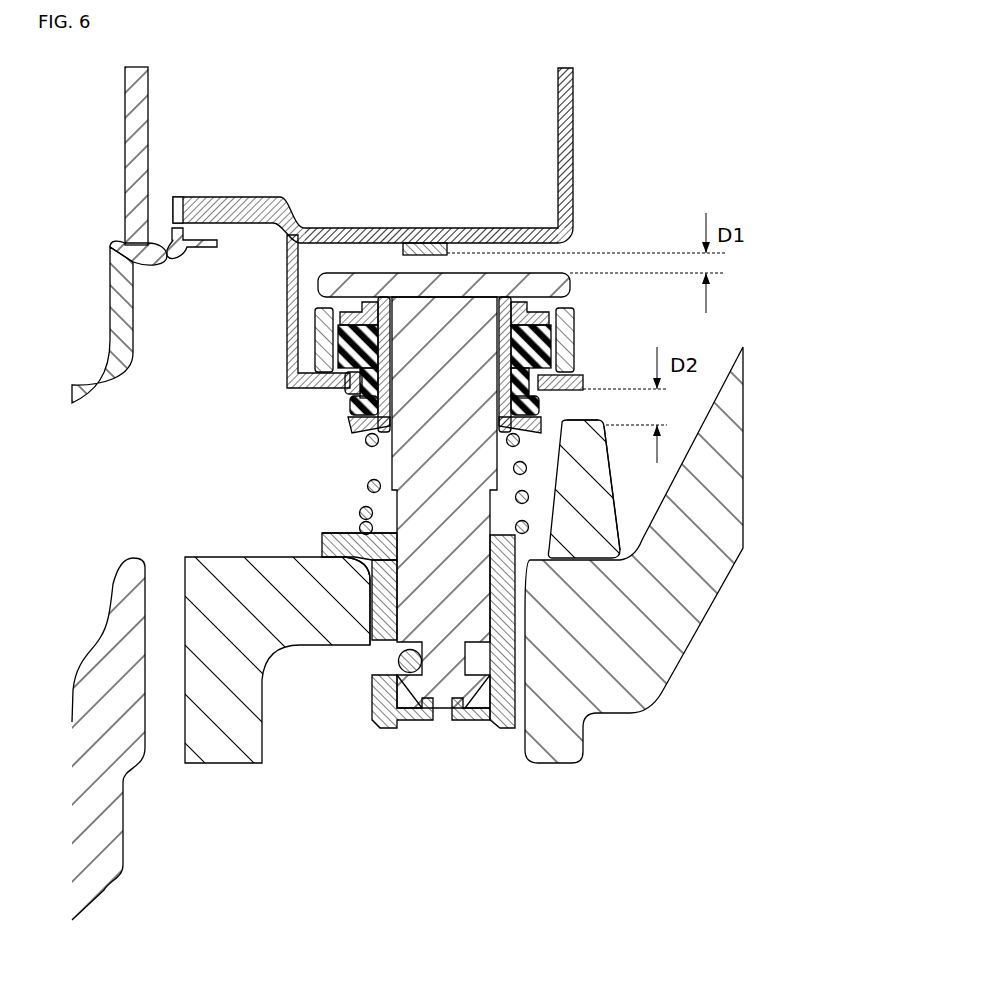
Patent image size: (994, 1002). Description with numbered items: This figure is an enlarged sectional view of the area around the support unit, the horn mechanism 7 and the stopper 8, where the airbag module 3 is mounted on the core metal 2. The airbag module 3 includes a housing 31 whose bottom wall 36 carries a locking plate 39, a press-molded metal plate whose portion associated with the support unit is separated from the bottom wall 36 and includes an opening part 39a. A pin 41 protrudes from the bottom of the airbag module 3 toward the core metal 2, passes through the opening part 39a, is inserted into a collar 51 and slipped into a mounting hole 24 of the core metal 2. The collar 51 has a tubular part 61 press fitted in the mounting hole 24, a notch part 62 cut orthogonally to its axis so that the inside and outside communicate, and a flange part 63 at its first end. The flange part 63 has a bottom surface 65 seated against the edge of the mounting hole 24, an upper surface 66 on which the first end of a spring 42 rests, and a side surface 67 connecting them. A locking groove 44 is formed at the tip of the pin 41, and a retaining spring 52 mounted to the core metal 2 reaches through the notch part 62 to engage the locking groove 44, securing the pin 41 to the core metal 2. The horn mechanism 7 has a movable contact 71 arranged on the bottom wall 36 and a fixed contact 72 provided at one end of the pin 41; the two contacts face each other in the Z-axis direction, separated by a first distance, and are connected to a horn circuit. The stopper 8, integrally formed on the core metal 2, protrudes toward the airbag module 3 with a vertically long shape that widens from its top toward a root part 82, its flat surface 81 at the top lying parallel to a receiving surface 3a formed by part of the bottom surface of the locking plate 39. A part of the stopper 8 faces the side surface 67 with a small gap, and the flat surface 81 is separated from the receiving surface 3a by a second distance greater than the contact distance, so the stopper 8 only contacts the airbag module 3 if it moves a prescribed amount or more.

The core metal 2 is at (683, 633).
The airbag module 3 is at (431, 221).
The receiving surface 3a is at (586, 378).
The housing 31 is at (578, 88).
The bottom wall 36 is at (487, 228).
The locking plate 39 is at (287, 325).
The opening part 39a is at (355, 403).
The horn mechanism 7 is at (444, 202).
The movable contact 71 is at (425, 247).
The fixed contact 72 is at (376, 273).
The stopper 8 is at (618, 492).
The flat surface 81 is at (564, 421).
The root part 82 is at (619, 529).
The mounting hole 24 is at (370, 598).
The pin 41 is at (568, 722).
The spring 42 is at (367, 486).
The locking groove 44 is at (485, 714).
The collar 51 is at (378, 590).
The retaining spring 52 is at (410, 674).
The tubular part 61 is at (550, 575).
The notch part 62 is at (380, 663).
The flange part 63 is at (320, 548).
The bottom surface 65 is at (368, 567).
The upper surface 66 is at (355, 533).
The side surface 67 is at (637, 645).